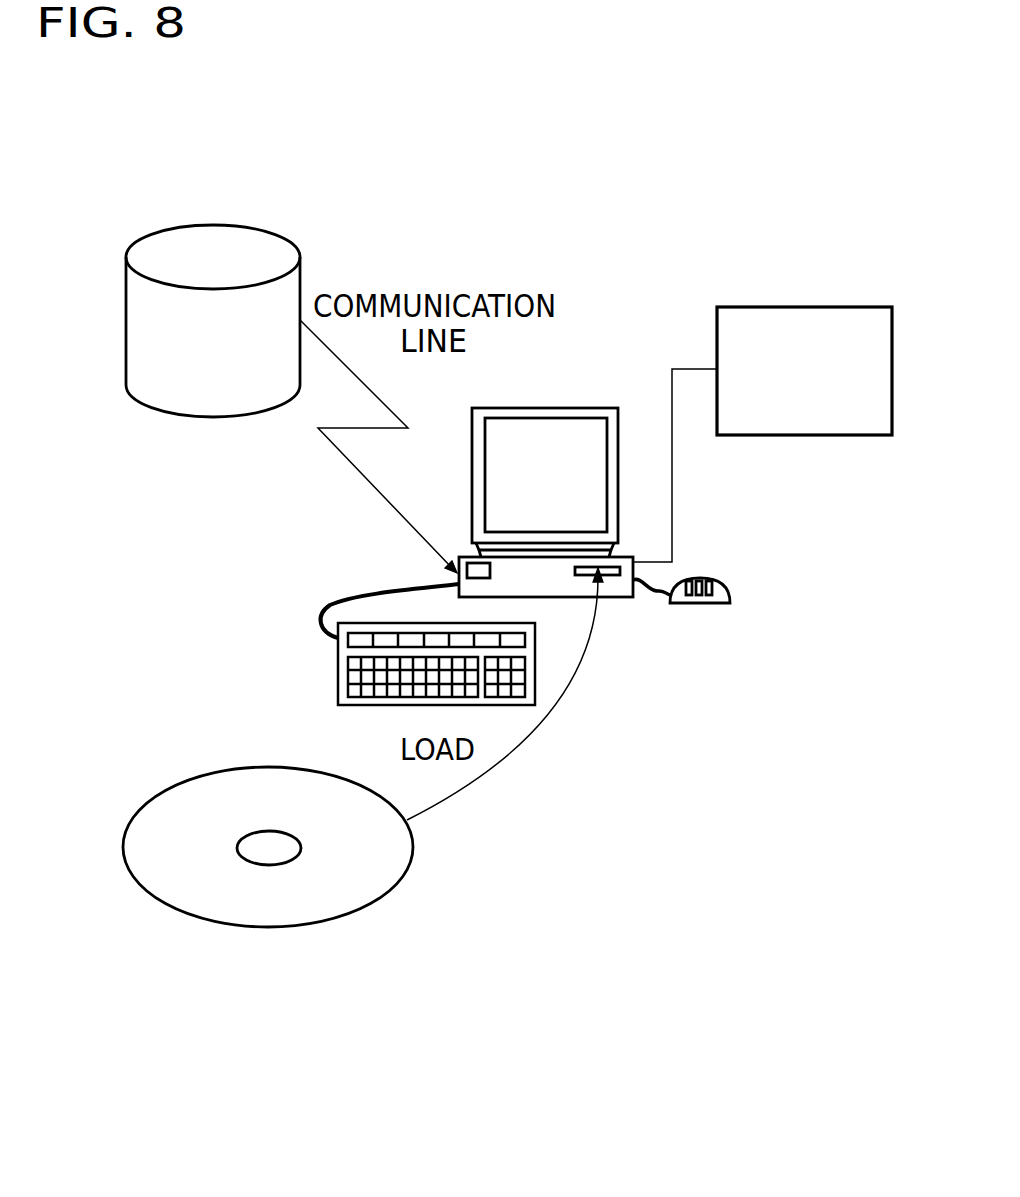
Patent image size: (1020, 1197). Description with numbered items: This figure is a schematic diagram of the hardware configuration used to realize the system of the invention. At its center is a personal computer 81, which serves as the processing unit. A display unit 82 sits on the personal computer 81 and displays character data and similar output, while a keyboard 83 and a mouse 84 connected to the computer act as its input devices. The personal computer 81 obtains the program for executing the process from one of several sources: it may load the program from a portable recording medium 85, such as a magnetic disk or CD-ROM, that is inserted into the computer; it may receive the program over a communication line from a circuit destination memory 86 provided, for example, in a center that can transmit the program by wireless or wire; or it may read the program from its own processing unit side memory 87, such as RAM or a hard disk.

The personal computer 81 is at (610, 598).
The display unit 82 is at (565, 407).
The keyboard 83 is at (338, 680).
The mouse 84 is at (715, 605).
The portable recording medium 85 is at (257, 928).
The circuit destination memory 86 is at (195, 417).
The processing unit side memory 87 is at (803, 435).